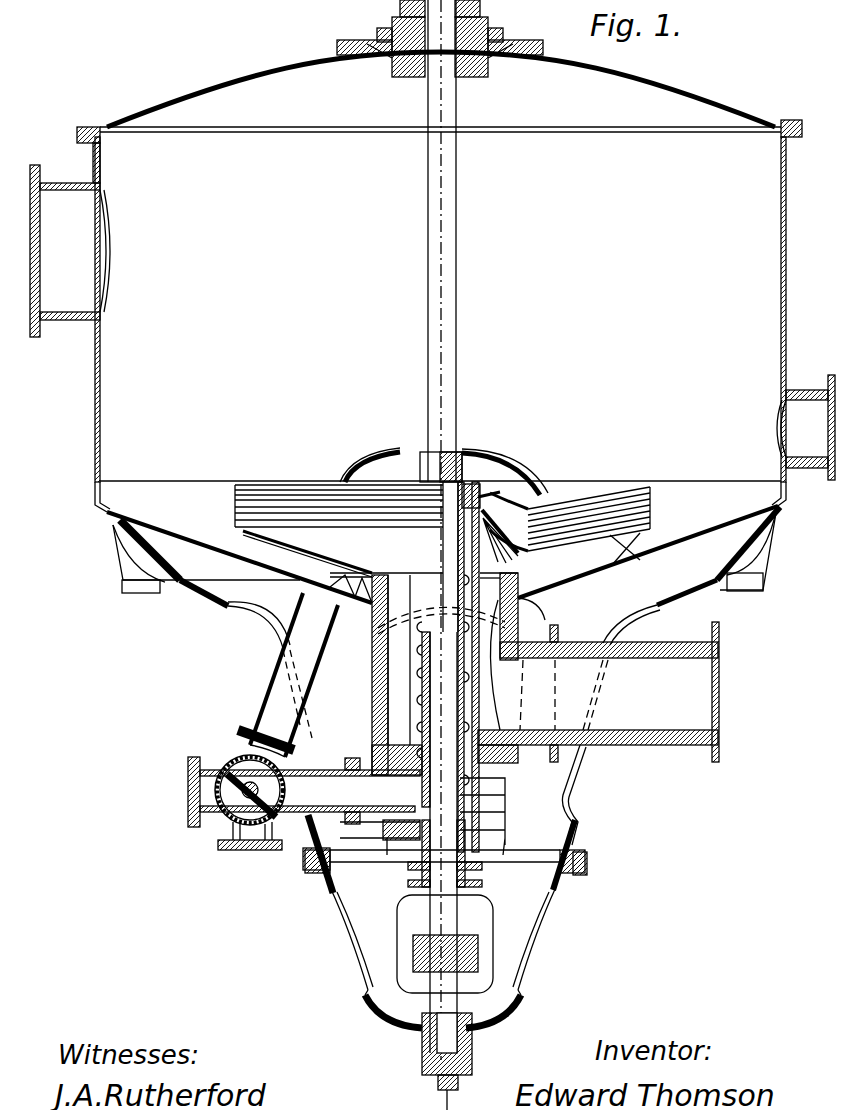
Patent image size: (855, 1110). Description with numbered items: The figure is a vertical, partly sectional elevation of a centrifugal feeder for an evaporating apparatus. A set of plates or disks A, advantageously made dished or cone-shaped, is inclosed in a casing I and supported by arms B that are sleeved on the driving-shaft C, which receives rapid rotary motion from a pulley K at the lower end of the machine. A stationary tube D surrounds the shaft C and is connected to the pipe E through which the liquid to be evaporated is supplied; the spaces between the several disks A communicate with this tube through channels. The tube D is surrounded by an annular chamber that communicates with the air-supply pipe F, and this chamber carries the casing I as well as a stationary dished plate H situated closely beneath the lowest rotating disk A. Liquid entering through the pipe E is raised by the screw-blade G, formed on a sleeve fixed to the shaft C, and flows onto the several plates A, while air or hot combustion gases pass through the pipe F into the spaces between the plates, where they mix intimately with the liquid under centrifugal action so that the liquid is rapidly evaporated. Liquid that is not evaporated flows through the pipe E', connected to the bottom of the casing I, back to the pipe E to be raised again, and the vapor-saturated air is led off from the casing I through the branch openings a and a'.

The branch opening a is at (70, 240).
The branch opening a' is at (806, 427).
The plates or disks A is at (450, 525).
The arms B is at (444, 468).
The driving-shaft C is at (448, 376).
The stationary tube D is at (512, 619).
The pipe E is at (304, 802).
The pipe E' is at (288, 675).
The air-supply pipe F is at (640, 708).
The screw-blade G is at (403, 812).
The stationary dished plate H is at (443, 577).
The casing I is at (484, 522).
The pulley K is at (488, 936).